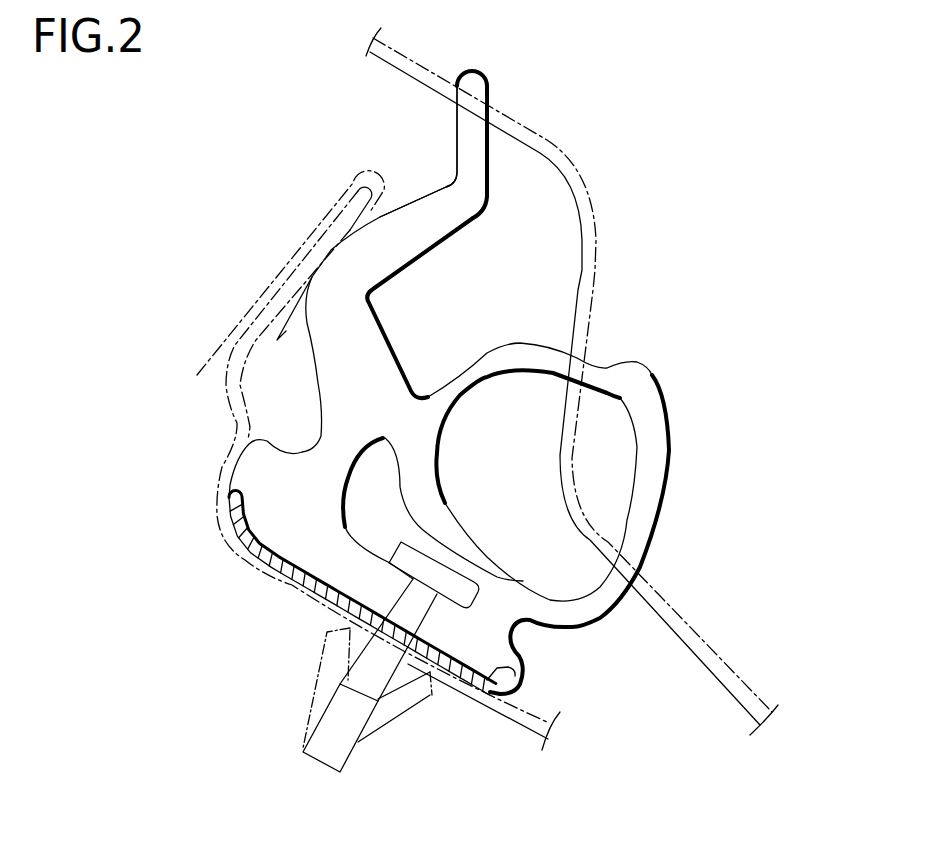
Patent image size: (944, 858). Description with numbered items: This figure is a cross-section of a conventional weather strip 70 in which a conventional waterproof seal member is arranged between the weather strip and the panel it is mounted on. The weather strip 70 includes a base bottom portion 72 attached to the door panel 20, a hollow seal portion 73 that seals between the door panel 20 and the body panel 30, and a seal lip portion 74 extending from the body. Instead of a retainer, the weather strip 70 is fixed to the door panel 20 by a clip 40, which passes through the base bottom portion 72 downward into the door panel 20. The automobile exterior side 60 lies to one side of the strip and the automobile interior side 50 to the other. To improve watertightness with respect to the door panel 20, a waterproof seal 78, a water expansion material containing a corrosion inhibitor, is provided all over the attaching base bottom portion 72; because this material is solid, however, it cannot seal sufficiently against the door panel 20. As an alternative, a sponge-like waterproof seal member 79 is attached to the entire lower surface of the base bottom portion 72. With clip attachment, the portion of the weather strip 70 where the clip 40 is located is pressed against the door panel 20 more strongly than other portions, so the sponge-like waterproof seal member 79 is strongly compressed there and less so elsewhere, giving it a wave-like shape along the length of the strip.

The door panel 20 is at (246, 325).
The body panel 30 is at (592, 263).
The clip 40 is at (343, 762).
The automobile interior side 50 is at (812, 590).
The automobile exterior side 60 is at (132, 590).
The weather strip 70 is at (686, 384).
The base bottom portion 72 is at (325, 600).
The hollow seal portion 73 is at (652, 507).
The seal lip portion 74 is at (457, 136).
The waterproof seal 78 is at (283, 572).
The sponge-like waterproof seal member 79 is at (357, 597).